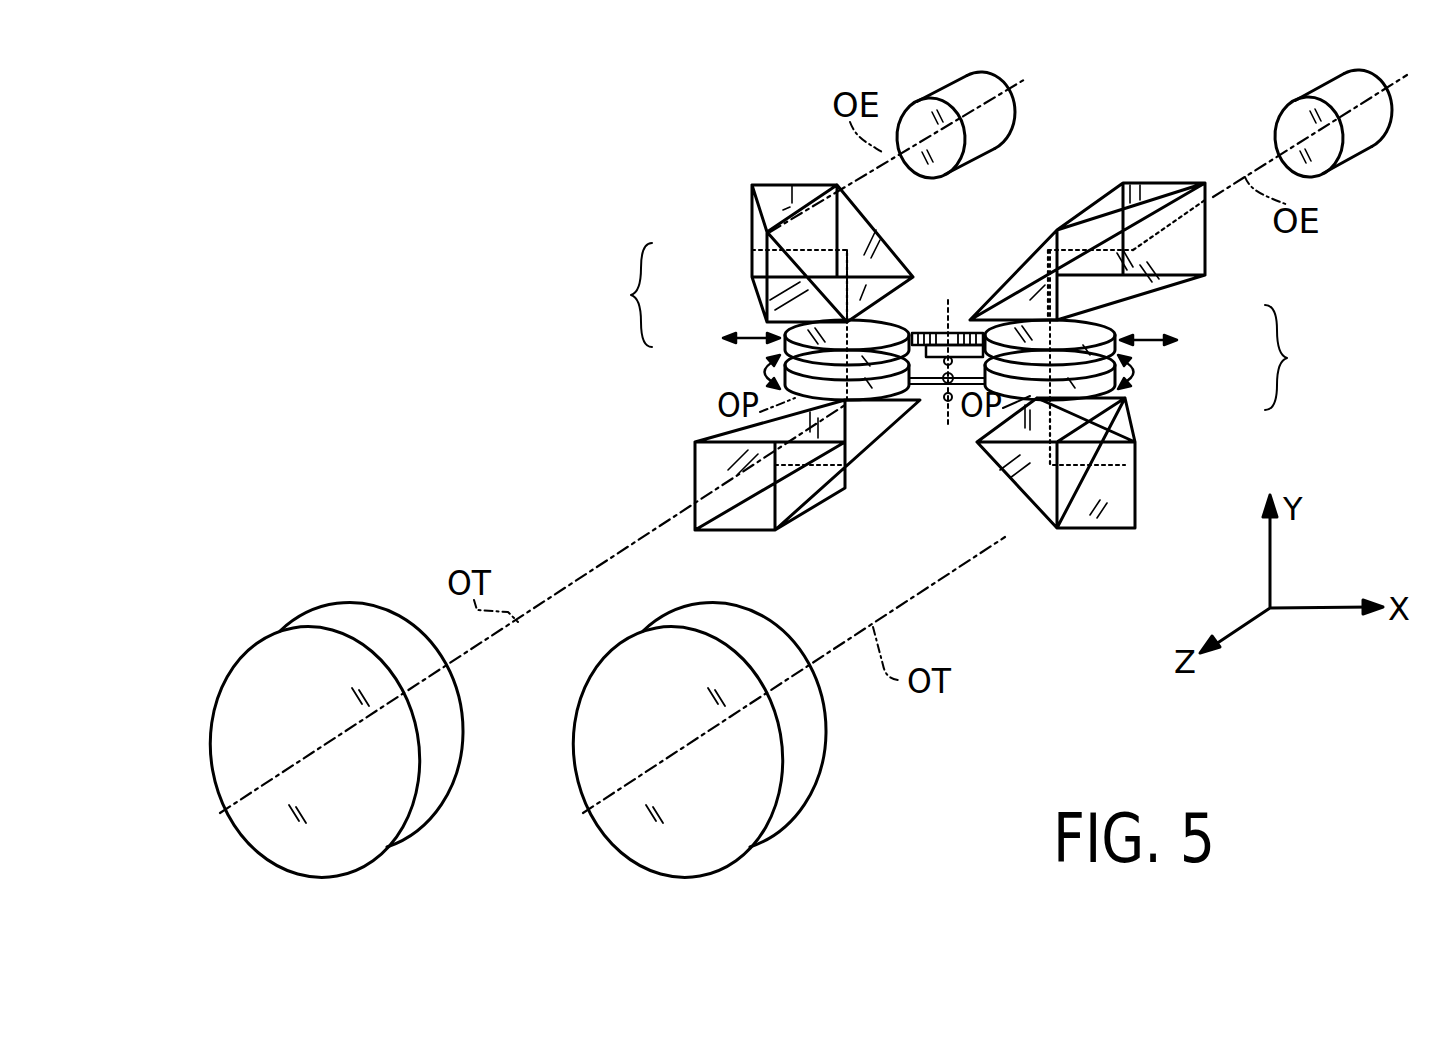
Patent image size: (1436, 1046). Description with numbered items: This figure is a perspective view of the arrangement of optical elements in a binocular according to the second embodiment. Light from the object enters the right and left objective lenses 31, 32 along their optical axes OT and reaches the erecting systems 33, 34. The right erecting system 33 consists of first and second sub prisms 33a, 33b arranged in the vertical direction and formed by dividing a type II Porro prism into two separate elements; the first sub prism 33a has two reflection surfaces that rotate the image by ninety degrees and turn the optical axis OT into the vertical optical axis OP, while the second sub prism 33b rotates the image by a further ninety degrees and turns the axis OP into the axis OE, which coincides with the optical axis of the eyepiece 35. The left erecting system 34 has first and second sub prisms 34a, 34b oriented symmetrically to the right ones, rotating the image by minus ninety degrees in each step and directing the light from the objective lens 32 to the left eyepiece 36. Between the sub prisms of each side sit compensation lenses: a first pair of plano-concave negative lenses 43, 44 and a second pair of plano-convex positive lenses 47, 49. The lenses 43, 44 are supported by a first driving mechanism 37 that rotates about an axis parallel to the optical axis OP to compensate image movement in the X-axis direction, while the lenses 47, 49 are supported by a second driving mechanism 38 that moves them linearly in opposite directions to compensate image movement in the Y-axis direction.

The objective lens 31 is at (273, 820).
The objective lens 32 is at (636, 820).
The erecting system 33 is at (625, 295).
The first sub prism 33a is at (700, 441).
The second sub prism 33b is at (752, 288).
The erecting system 34 is at (1295, 357).
The first sub prism 34a is at (1137, 452).
The second sub prism 34b is at (1160, 245).
The eyepiece 35 is at (948, 92).
The eyepiece 36 is at (1326, 92).
The first driving mechanism 37 is at (919, 430).
The second driving mechanism 38 is at (974, 299).
The compensation lens 43 is at (913, 333).
The compensation lens 44 is at (1140, 374).
The compensation lens 47 is at (880, 318).
The compensation lens 49 is at (1112, 332).